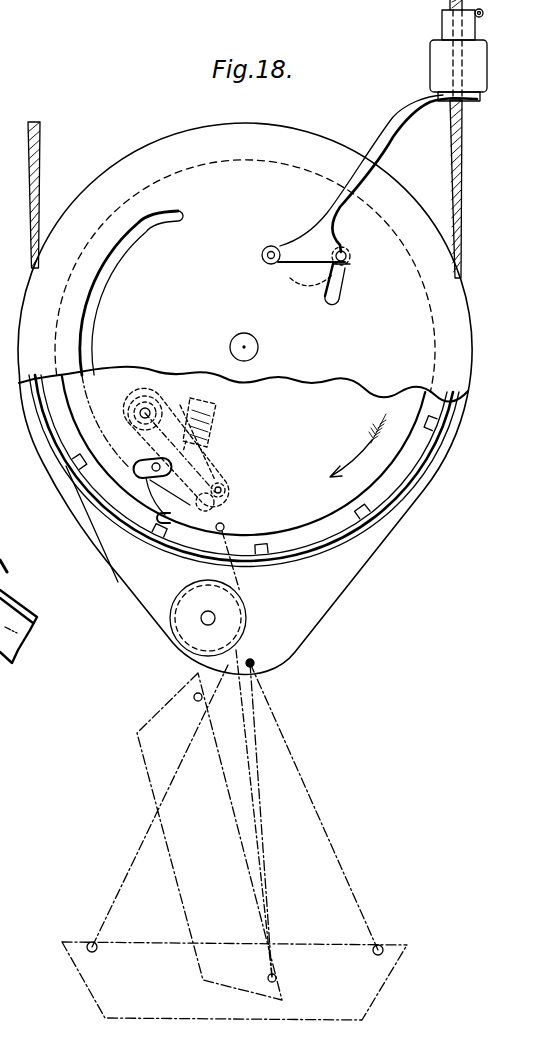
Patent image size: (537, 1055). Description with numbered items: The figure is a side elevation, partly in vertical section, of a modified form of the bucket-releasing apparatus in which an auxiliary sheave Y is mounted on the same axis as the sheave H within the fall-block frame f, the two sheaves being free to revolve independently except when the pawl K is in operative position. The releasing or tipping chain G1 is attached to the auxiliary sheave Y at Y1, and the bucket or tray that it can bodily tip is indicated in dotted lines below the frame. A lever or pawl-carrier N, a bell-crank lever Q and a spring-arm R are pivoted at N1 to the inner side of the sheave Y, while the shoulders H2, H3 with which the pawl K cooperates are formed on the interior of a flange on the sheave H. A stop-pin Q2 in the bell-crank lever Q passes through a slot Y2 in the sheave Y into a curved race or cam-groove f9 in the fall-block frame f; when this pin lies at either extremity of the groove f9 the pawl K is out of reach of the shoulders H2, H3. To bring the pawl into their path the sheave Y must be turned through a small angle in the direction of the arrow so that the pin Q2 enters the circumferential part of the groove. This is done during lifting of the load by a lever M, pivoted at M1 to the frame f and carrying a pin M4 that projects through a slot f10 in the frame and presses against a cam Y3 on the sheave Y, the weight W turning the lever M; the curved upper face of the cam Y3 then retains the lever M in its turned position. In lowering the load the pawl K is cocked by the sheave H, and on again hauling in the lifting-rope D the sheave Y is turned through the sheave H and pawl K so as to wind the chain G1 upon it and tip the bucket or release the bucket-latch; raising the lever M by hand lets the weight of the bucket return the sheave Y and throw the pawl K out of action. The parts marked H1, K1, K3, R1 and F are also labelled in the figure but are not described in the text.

The lifting-rope D is at (40, 150).
The weight W is at (432, 63).
The lever M is at (388, 132).
The pivot M1 is at (271, 246).
The pin M4 is at (347, 254).
The cam Y3 is at (305, 278).
The slot f10 is at (342, 283).
The curved race or cam-groove f9 is at (104, 281).
The fall-block frame f is at (245, 398).
The sheave H is at (60, 407).
The ring inner edge H1 is at (84, 484).
The shoulder H2 is at (70, 463).
The shoulder H3 is at (155, 540).
The guide arc K3 is at (244, 465).
The pivot N1 is at (142, 402).
The lever or pawl-carrier N is at (175, 452).
The bell-crank lever Q is at (180, 408).
The spring R1 is at (213, 428).
The spring-arm R is at (208, 453).
The auxiliary sheave Y is at (324, 445).
The slot Y2 is at (138, 472).
The stop-pin Q2 is at (155, 498).
The pawl K is at (162, 519).
The pawl K1 is at (232, 510).
The attachment point Y1 is at (226, 527).
The releasing or tipping chain G1 is at (240, 577).
The frame F is at (234, 841).